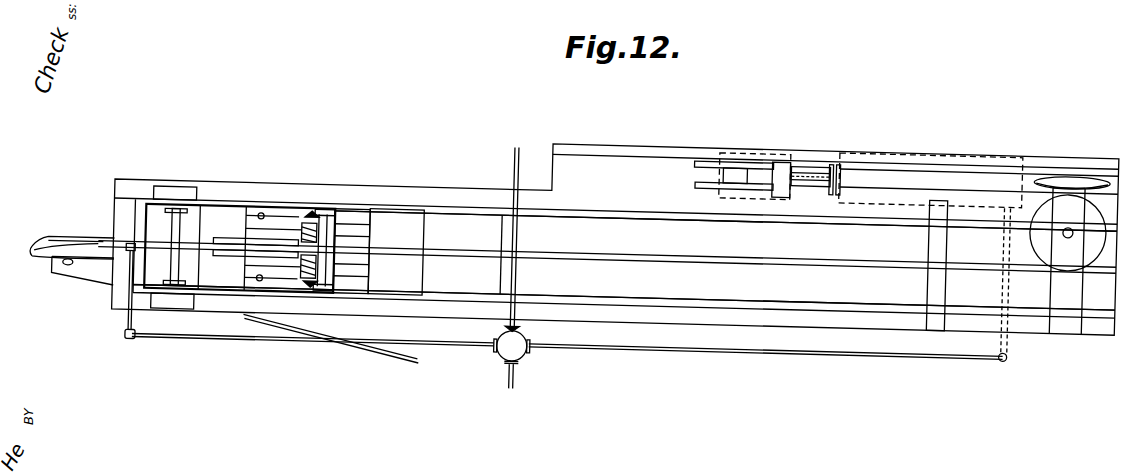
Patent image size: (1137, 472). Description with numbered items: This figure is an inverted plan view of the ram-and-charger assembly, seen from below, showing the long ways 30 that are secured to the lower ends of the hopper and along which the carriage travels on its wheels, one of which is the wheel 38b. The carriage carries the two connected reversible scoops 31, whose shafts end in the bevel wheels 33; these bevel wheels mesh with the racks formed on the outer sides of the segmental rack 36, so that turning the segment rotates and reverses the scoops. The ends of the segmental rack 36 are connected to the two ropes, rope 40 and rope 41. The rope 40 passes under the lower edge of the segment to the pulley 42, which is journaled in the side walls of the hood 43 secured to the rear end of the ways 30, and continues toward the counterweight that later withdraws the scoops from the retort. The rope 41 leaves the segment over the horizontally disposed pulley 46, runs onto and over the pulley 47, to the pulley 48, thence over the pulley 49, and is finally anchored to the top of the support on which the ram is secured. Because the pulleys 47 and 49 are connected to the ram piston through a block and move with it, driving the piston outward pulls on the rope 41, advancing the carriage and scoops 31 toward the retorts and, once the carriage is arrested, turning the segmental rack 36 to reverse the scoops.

The ways 30 is at (462, 186).
The reversible scoops 31 is at (625, 258).
The bevel wheel 33 is at (317, 202).
The segmental rack 36 is at (224, 254).
The wheel 38b is at (180, 302).
The rope 40 is at (386, 346).
The rope 41 is at (890, 245).
The pulley 42 is at (44, 260).
The hood 43 is at (97, 274).
The horizontally disposed pulley 46 is at (1041, 213).
The pulley 47 is at (702, 173).
The pulley 48 is at (1080, 152).
The pulley 49 is at (711, 151).